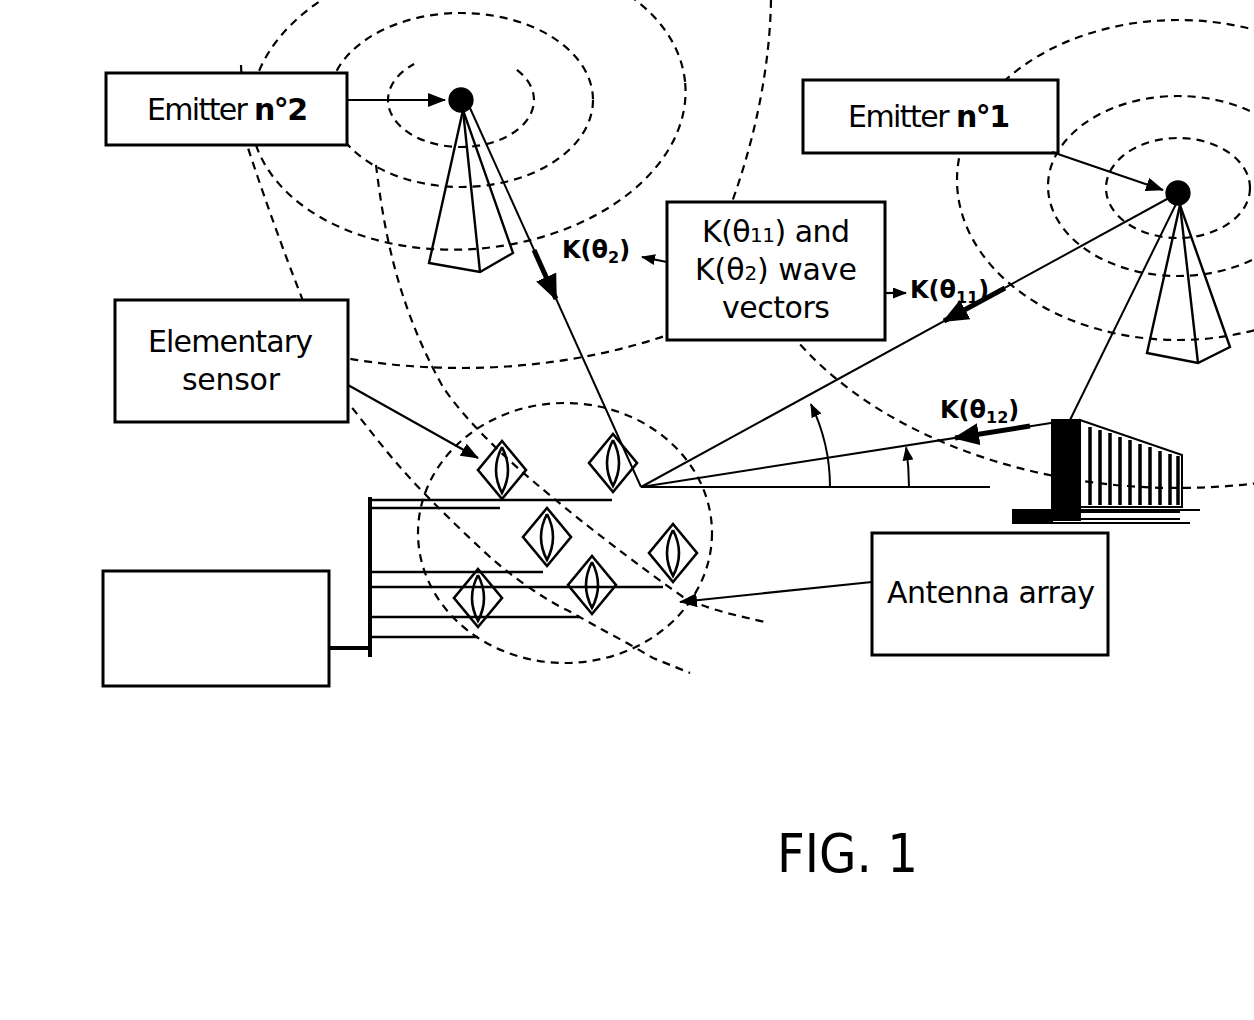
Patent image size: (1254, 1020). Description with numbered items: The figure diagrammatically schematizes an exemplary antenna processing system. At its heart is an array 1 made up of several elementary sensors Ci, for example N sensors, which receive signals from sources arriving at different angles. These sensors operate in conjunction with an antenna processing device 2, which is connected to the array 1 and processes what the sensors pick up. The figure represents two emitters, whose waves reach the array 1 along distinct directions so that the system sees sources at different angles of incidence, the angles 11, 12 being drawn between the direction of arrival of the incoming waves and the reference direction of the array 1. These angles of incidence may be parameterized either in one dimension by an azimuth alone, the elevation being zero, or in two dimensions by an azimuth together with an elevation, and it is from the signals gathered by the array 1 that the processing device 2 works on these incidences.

The array 1 is at (601, 650).
The antenna processing device 2 is at (272, 687).
The angle of arrival θ11 from emitter 1 direct path 11 is at (830, 441).
The angle of arrival θ12 from emitter 1 reflected path 12 is at (935, 467).